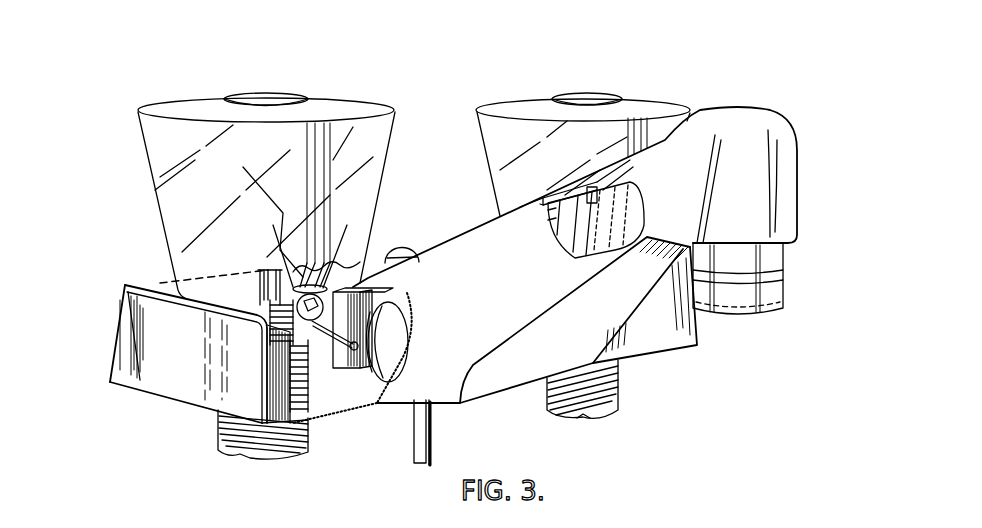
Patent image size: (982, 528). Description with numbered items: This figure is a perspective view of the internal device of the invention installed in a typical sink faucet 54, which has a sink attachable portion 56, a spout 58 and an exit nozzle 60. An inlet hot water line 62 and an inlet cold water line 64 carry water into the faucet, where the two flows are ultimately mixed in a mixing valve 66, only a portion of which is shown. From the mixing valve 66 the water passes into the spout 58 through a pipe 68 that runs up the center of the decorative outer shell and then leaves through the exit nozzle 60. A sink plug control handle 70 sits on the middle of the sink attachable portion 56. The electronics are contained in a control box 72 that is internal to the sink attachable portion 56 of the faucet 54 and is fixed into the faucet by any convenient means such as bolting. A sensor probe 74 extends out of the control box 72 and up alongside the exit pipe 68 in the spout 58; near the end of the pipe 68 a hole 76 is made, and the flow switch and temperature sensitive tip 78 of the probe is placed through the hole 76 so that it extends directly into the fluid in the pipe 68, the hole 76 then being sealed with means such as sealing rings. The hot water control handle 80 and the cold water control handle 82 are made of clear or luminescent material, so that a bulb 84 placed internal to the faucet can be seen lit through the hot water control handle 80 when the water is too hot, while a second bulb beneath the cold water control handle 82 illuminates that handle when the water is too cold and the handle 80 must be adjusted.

The sink faucet 54 is at (148, 395).
The sink attachable portion 56 is at (118, 340).
The spout 58 is at (778, 122).
The exit nozzle 60 is at (778, 290).
The inlet hot water line 62 is at (283, 448).
The inlet cold water line 64 is at (587, 418).
The mixing valve 66 is at (407, 345).
The pipe 68 is at (577, 227).
The sink plug control handle 70 is at (415, 257).
The control box 72 is at (353, 363).
The sensor probe 74 is at (547, 208).
The hole 76 is at (613, 190).
The flow switch and temperature sensitive tip 78 is at (617, 220).
The hot water control handle 80 is at (363, 112).
The cold water control handle 82 is at (528, 108).
The bulb 84 is at (272, 335).